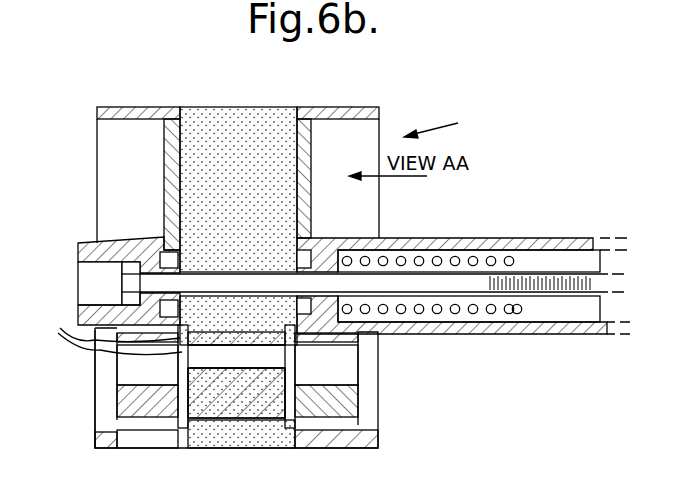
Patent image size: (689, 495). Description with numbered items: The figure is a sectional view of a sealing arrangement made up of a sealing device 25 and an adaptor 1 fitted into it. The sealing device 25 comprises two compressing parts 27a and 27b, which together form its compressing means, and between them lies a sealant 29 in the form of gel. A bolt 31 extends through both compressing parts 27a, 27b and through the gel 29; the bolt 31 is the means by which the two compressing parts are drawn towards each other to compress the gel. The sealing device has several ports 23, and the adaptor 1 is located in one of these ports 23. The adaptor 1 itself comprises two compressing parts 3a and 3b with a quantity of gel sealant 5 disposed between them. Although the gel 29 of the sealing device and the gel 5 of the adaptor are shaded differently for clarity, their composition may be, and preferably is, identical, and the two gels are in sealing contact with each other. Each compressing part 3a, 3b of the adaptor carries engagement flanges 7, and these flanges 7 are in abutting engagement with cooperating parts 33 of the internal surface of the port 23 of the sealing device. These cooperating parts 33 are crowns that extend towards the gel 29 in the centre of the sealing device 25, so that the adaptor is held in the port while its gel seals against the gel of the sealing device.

The adaptor 1 is at (112, 405).
The compressing part 3a is at (135, 360).
The compressing part 3b is at (340, 362).
The sealant 5 is at (258, 420).
The engagement flanges 7 is at (196, 432).
The ports 23 is at (370, 413).
The sealing device 25 is at (447, 123).
The compressing part 27a is at (126, 112).
The compressing part 27b is at (367, 110).
The sealant 29 is at (275, 127).
The bolt 31 is at (412, 285).
The cooperating parts 33 is at (107, 333).